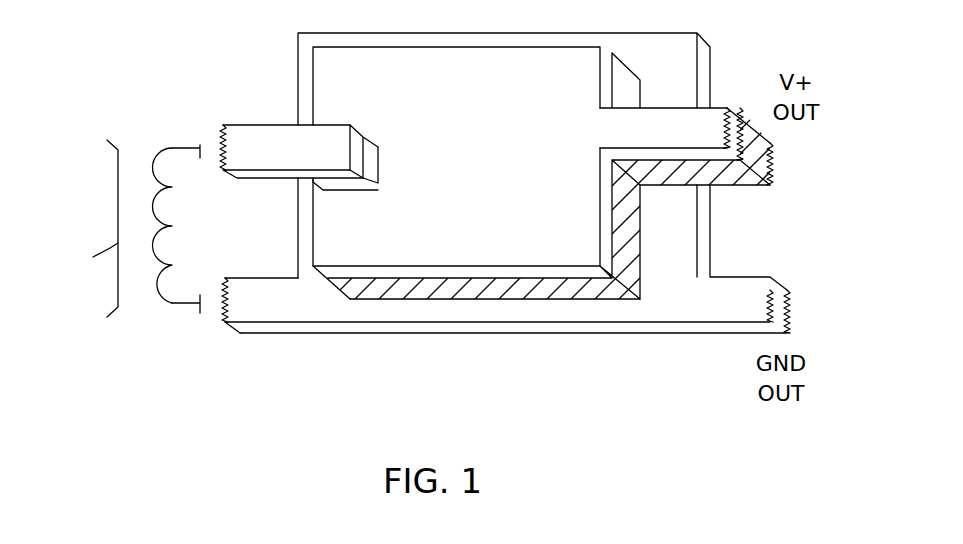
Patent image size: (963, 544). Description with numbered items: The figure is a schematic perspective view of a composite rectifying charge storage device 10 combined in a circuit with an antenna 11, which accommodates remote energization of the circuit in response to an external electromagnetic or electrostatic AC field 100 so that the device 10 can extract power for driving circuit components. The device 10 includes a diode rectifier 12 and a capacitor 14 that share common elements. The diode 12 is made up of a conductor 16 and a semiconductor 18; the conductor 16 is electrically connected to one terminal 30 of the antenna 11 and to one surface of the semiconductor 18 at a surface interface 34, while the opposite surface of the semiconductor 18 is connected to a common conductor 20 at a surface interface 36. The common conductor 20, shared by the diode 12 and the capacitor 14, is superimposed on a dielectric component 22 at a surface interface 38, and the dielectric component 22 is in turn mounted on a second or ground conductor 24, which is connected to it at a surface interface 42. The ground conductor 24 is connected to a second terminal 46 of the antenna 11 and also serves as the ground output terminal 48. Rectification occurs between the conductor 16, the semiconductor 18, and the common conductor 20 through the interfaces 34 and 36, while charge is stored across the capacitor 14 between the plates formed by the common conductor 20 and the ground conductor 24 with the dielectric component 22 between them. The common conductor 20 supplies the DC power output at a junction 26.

The composite rectifying charge storage device 10 is at (591, 231).
The antenna 11 is at (158, 150).
The diode rectifier 12 is at (282, 168).
The capacitor 14 is at (558, 330).
The conductor 16 is at (339, 138).
The semiconductor 18 is at (372, 163).
The common conductor 20 is at (548, 118).
The dielectric component 22 is at (338, 289).
The ground conductor 24 is at (662, 307).
The junction 26 is at (727, 108).
The antenna terminal 30 is at (200, 145).
The surface interface 34 is at (363, 133).
The surface interface 36 is at (378, 190).
The surface interface 38 is at (468, 283).
The surface interface 42 is at (528, 300).
The second antenna terminal 46 is at (200, 310).
The ground output terminal 48 is at (755, 293).
The AC field 100 is at (121, 211).